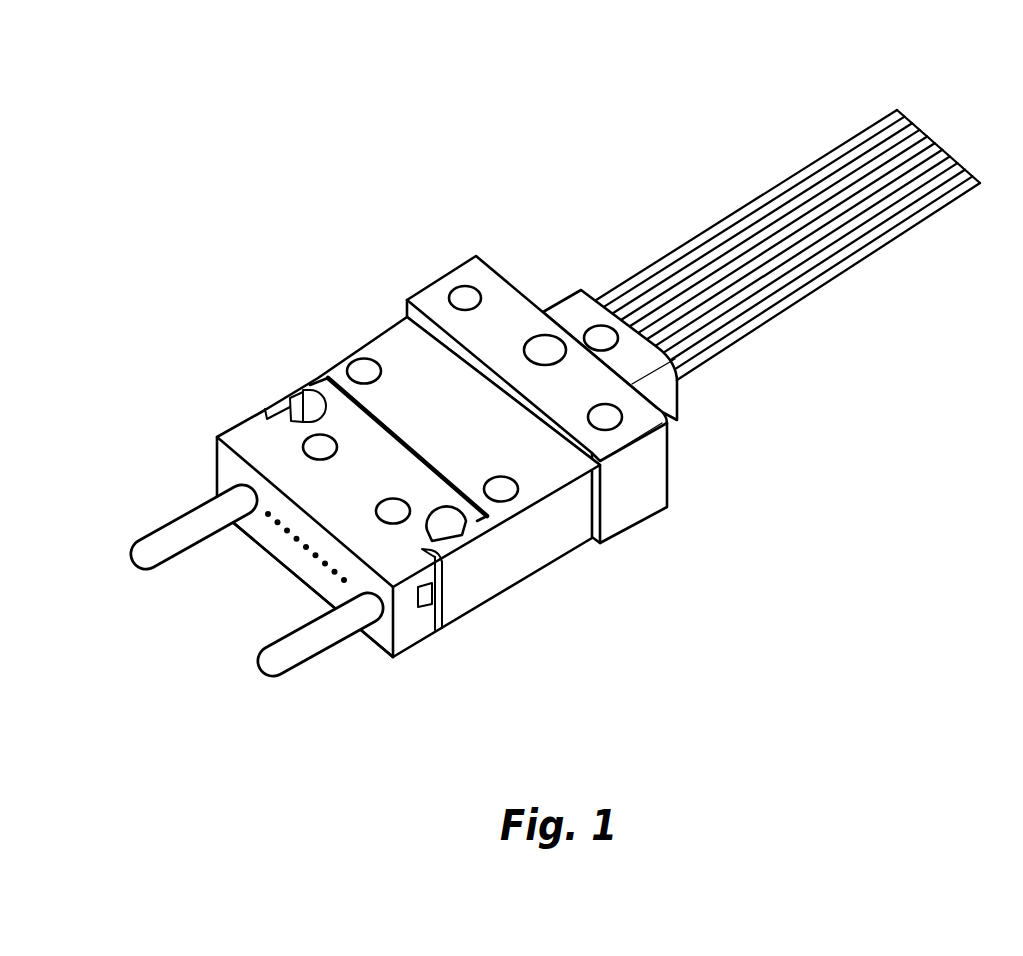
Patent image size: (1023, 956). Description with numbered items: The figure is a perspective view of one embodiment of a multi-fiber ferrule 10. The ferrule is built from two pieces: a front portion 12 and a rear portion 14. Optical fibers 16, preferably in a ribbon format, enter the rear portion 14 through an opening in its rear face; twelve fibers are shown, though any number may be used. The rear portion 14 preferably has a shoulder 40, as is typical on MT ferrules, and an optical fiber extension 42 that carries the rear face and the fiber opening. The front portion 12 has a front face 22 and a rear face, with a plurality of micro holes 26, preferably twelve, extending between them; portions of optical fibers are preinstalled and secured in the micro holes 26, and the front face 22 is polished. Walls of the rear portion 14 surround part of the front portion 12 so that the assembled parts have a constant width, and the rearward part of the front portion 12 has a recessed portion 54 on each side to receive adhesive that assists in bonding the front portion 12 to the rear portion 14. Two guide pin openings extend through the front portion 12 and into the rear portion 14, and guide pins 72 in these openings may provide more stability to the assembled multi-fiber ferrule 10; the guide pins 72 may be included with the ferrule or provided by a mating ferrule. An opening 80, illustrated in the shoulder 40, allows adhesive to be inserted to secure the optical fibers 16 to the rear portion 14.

The multi-fiber ferrule 10 is at (490, 186).
The front portion 12 is at (407, 638).
The rear portion 14 is at (552, 552).
The optical fibers 16 is at (873, 257).
The front face 22 is at (373, 647).
The micro holes 26 is at (317, 557).
The shoulder 40 is at (638, 515).
The optical fiber extension 42 is at (668, 392).
The recessed portion 54 is at (307, 407).
The guide pins 72 is at (131, 544).
The opening 80 is at (537, 345).